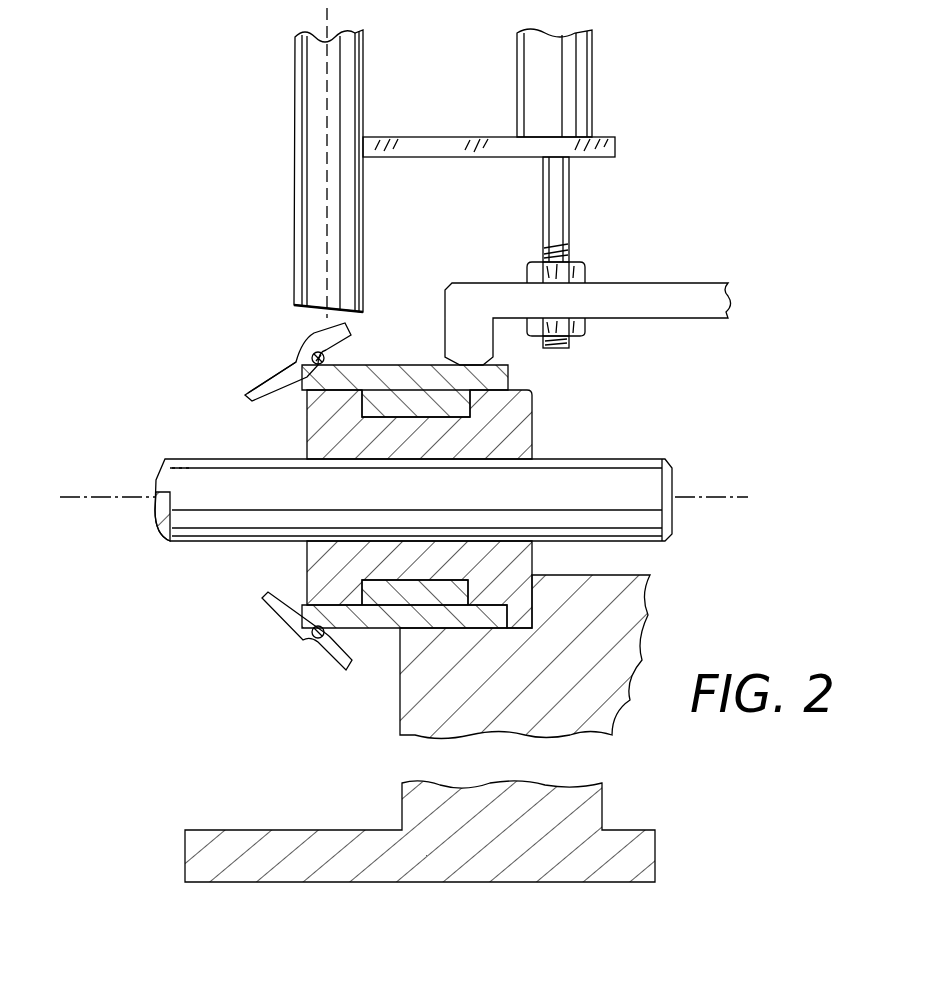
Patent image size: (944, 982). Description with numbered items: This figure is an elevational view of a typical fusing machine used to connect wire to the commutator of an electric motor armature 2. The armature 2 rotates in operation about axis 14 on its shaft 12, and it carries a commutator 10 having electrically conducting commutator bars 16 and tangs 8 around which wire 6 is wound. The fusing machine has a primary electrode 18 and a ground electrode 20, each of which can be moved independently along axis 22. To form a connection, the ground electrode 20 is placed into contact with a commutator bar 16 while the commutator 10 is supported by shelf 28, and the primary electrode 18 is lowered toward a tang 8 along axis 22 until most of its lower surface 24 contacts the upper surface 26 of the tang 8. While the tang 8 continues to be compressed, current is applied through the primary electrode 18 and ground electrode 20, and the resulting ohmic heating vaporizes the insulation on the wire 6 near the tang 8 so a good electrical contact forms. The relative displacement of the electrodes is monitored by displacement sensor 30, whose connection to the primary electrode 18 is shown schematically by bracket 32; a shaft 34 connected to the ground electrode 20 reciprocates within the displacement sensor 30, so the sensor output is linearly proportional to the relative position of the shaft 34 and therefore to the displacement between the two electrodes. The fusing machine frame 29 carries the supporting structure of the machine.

The electric motor armature 2 is at (283, 657).
The wire 6 is at (335, 355).
The tang 8 is at (328, 352).
The commutator 10 is at (307, 417).
The shaft 12 is at (655, 458).
The axis 14 is at (115, 497).
The commutator bar 16 is at (510, 370).
The primary electrode 18 is at (295, 238).
The ground electrode 20 is at (672, 284).
The axis 22 is at (325, 10).
The lower surface 24 is at (312, 318).
The upper surface 26 is at (300, 346).
The shelf 28 is at (652, 577).
The fusing machine frame 29 is at (538, 882).
The displacement sensor 30 is at (593, 78).
The bracket 32 is at (478, 137).
The shaft 34 is at (570, 206).